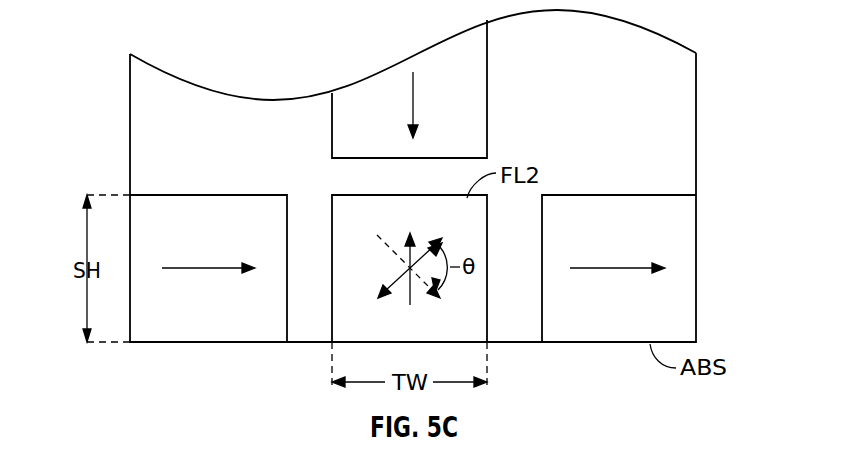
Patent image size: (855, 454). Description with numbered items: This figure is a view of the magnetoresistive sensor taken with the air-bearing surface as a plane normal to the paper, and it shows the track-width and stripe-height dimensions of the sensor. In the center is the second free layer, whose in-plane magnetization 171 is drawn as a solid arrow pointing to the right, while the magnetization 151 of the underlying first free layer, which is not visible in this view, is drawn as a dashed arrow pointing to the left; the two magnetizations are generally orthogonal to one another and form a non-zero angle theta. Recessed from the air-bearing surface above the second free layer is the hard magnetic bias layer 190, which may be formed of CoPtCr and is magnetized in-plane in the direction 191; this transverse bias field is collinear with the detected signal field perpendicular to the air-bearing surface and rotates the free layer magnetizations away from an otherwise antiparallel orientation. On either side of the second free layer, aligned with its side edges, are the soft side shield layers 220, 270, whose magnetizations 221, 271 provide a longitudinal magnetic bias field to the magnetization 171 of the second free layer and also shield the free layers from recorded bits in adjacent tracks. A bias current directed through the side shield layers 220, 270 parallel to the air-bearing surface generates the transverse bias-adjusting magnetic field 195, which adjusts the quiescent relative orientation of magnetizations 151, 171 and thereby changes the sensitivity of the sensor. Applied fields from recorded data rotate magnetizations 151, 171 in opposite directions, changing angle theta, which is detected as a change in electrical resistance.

The hard magnetic bias layer 190 is at (473, 88).
The magnetization of hard bias layer 191 is at (410, 92).
The magnetization of FL1 151 is at (435, 240).
The magnetization of FL2 171 is at (395, 272).
The transverse bias-adjusting magnetic field 195 is at (408, 302).
The side shield layer 220 is at (150, 345).
The magnetization of layer 220 221 is at (203, 267).
The side shield layer 270 is at (682, 298).
The magnetization of layer 270 271 is at (615, 267).